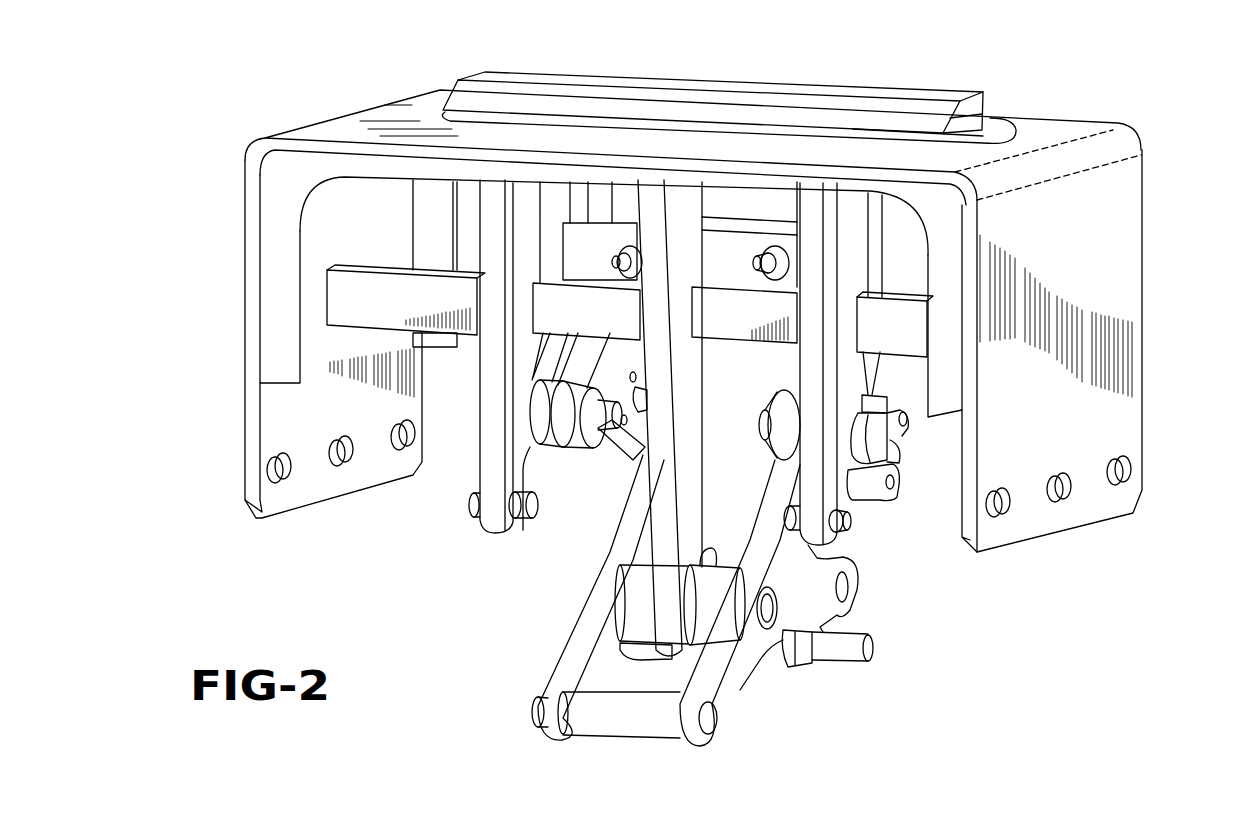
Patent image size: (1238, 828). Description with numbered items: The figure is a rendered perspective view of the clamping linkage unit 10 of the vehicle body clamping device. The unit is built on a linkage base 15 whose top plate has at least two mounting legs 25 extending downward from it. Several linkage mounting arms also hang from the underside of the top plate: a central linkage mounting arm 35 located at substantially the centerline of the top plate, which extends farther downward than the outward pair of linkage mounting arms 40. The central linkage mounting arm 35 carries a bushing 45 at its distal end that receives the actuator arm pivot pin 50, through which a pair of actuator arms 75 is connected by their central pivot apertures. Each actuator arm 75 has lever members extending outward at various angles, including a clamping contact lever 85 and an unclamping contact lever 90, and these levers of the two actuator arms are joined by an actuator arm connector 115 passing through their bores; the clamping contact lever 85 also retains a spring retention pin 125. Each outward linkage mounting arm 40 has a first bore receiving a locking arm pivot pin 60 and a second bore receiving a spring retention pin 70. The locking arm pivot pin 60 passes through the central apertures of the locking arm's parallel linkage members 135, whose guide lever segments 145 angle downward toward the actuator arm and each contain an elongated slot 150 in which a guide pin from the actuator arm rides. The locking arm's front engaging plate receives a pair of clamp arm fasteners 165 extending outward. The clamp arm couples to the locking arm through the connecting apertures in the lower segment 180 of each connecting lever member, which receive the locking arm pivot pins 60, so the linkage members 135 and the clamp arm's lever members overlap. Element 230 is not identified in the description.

The clamping linkage unit 10 is at (180, 150).
The linkage base 15 is at (1080, 110).
The mounting legs 25 is at (243, 335).
The handle bar 230 is at (578, 80).
The outward linkage mounting arms 40 is at (490, 270).
The clamp arm fasteners 165 is at (630, 262).
The central linkage mounting arm 35 is at (658, 372).
The lower segment 180 is at (545, 428).
The linkage members 135 is at (572, 430).
The locking arm pivot pin 60 is at (600, 435).
The elongated slot 150 is at (900, 450).
The guide lever segment 145 is at (898, 485).
The spring retention pin 70 is at (845, 520).
The bushing 45 is at (620, 592).
The actuator arm 75 is at (535, 650).
The unclamping contact lever 90 is at (545, 710).
The actuator arm connector 115 is at (630, 720).
The actuator arm pivot pin 50 is at (780, 610).
The clamping contact lever 85 is at (835, 563).
The spring retention pin 125 is at (868, 650).